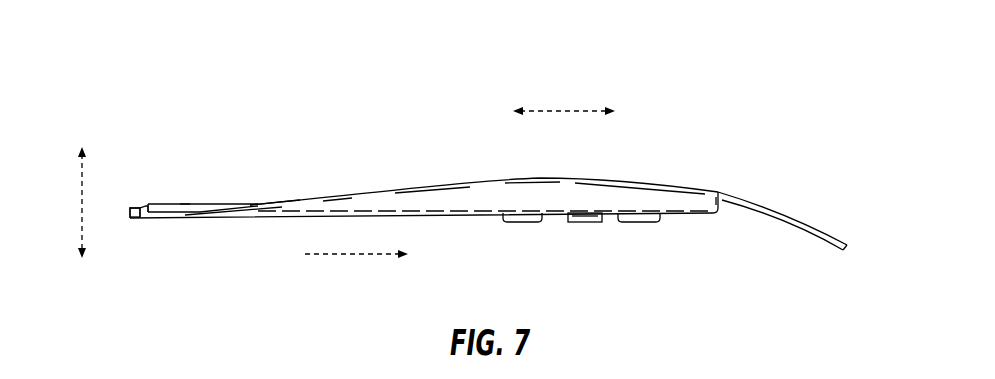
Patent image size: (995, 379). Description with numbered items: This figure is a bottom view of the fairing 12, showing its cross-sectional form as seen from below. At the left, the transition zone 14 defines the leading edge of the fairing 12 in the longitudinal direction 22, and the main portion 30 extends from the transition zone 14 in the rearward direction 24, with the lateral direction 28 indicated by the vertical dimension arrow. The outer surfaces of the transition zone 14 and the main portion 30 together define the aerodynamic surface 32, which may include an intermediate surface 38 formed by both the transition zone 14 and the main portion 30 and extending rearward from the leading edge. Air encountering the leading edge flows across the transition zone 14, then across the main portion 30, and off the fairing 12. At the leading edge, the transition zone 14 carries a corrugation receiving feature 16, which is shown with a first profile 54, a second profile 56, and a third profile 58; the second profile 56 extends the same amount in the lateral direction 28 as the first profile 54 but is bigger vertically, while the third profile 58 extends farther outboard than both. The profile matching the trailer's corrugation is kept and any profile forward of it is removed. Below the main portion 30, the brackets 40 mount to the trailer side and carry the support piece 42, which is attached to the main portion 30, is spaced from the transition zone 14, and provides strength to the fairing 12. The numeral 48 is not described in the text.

The fairing 12 is at (152, 60).
The transition zone 14 is at (187, 218).
The corrugation receiving feature 16 is at (176, 205).
The longitudinal direction 22 is at (565, 109).
The rearward direction 24 is at (358, 255).
The lateral direction 28 is at (82, 201).
The main portion 30 is at (645, 183).
The aerodynamic surface 32 is at (340, 188).
The intermediate surface 38 is at (283, 205).
The bracket 40 is at (585, 222).
The support piece 42 is at (523, 222).
The joint 48 is at (187, 195).
The first profile 54 is at (131, 218).
The second profile 56 is at (138, 207).
The third profile 58 is at (208, 207).